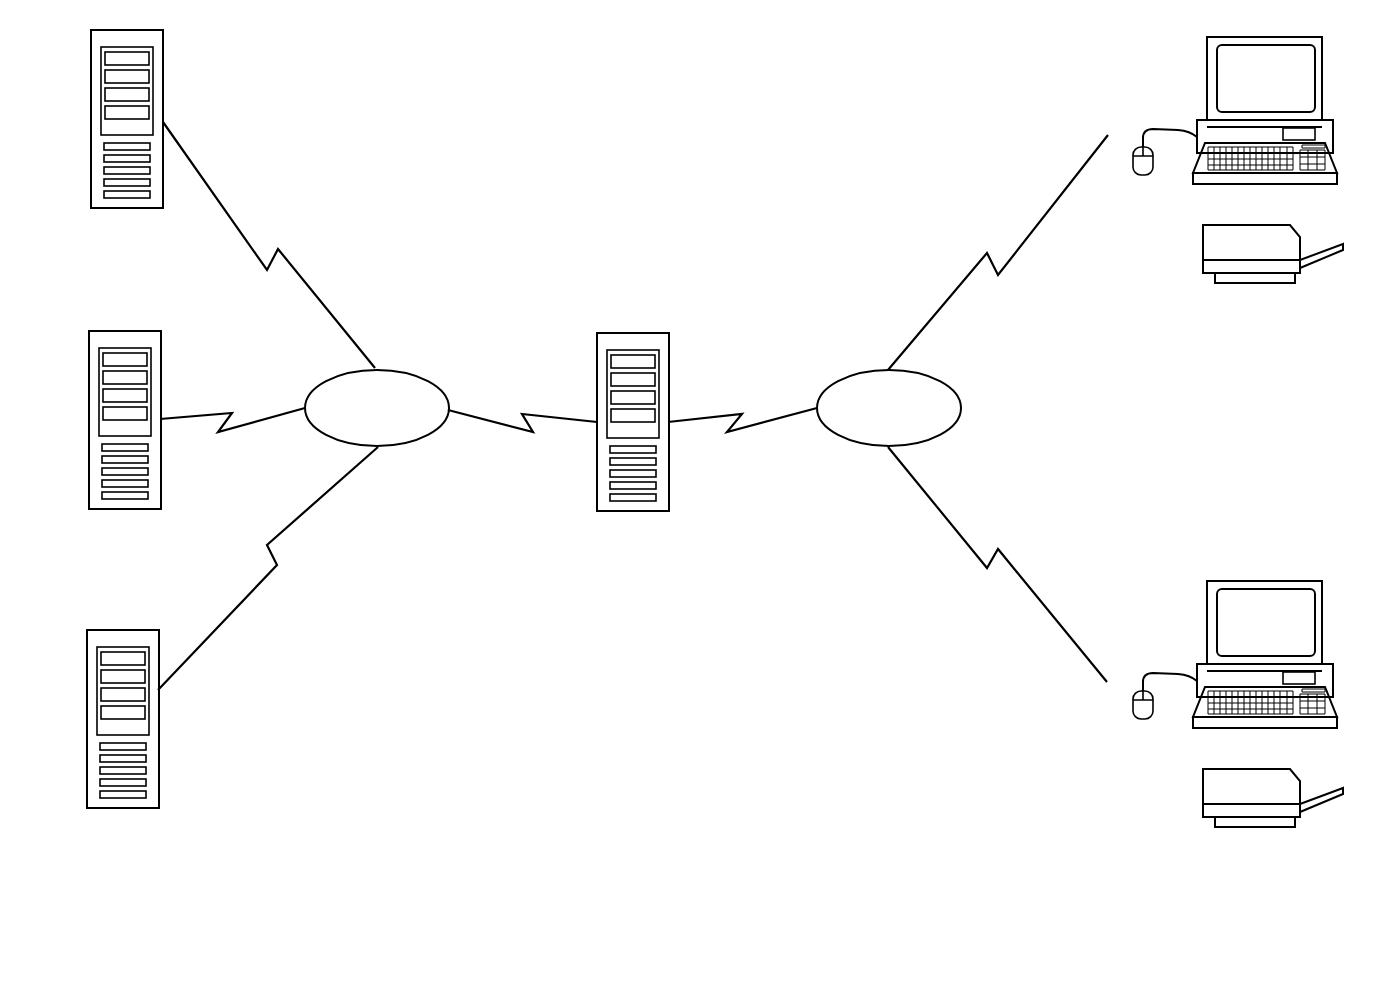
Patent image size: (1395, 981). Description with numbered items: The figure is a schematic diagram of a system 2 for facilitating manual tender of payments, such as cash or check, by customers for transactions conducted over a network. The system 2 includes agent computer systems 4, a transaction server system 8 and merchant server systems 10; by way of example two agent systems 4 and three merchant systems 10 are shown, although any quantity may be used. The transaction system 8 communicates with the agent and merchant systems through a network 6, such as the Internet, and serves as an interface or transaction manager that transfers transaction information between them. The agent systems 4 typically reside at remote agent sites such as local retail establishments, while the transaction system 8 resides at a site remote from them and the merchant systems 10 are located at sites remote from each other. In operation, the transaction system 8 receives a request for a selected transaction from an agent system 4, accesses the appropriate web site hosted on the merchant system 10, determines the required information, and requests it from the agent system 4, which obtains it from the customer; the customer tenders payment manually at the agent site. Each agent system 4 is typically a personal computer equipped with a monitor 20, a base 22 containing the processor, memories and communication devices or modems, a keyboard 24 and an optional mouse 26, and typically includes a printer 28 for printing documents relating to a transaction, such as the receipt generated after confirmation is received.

The system 2 is at (578, 173).
The agent computer system 4 is at (1172, 88).
The network 6 is at (420, 440).
The transaction server system 8 is at (597, 483).
The merchant server system 10 is at (91, 167).
The monitor 20 is at (1322, 612).
The base 22 is at (1330, 683).
The keyboard 24 is at (1313, 730).
The mouse 26 is at (1132, 712).
The printer 28 is at (1202, 783).